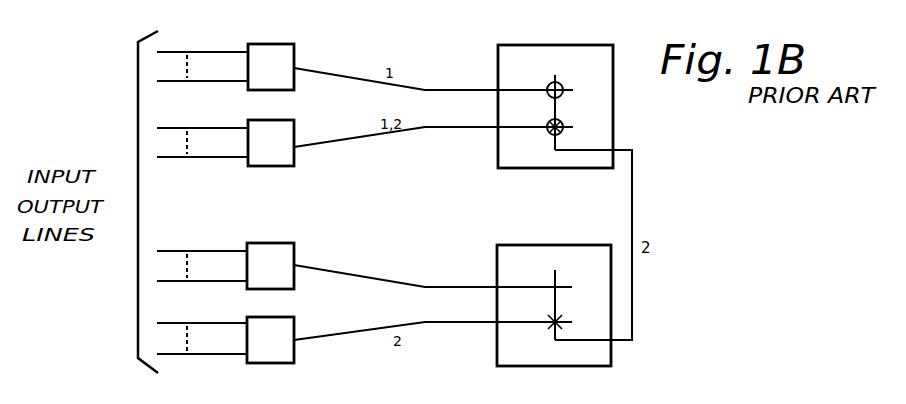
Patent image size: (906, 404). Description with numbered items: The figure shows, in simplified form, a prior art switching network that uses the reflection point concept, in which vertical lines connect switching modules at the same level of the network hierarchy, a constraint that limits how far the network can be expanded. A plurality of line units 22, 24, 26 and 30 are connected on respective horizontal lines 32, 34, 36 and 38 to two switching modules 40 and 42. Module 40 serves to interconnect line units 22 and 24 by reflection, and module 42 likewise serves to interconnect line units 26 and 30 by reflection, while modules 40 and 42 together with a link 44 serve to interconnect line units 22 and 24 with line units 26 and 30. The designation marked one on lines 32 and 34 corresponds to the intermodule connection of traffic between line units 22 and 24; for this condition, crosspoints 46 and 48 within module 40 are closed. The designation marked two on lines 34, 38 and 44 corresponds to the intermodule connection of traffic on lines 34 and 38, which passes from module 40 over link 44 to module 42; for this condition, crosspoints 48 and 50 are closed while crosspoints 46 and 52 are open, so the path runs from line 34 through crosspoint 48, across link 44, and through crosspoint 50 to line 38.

The line unit 22 is at (278, 36).
The line unit 24 is at (278, 114).
The line unit 26 is at (256, 243).
The line unit 30 is at (257, 317).
The horizontal line 32 is at (311, 71).
The horizontal line 34 is at (311, 143).
The horizontal line 36 is at (315, 270).
The horizontal line 38 is at (308, 332).
The switching module 40 is at (532, 45).
The switching module 42 is at (527, 245).
The link 44 is at (632, 183).
The crosspoint 46 is at (562, 85).
The crosspoint 48 is at (563, 131).
The crosspoint 50 is at (552, 328).
The crosspoint 52 is at (556, 285).